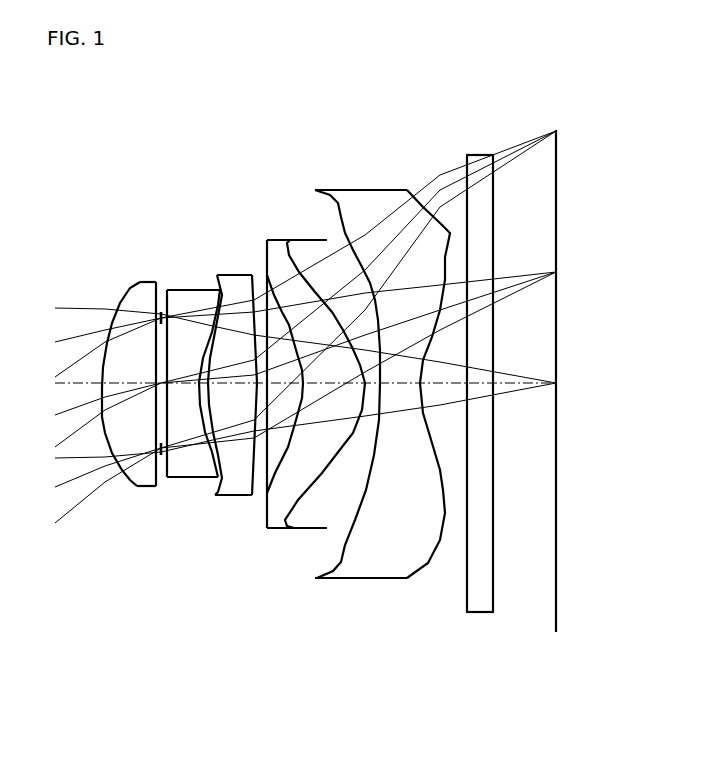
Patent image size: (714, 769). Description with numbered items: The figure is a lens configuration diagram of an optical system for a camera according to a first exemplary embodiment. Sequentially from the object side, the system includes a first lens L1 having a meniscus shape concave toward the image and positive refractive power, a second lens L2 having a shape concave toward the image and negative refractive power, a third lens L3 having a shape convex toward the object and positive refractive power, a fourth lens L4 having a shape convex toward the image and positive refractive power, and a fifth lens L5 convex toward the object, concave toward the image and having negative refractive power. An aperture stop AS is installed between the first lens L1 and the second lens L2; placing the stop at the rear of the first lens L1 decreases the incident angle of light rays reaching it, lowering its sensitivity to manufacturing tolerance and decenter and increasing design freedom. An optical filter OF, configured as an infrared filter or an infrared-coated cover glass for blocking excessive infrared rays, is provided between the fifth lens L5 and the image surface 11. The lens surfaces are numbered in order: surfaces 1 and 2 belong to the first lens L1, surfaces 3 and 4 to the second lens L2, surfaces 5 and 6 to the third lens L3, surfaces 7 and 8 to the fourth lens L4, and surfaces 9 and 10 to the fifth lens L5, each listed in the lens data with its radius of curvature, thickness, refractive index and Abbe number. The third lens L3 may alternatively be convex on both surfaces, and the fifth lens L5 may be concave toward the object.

The first surface 1 is at (114, 303).
The second surface 2 is at (156, 281).
The third surface 3 is at (156, 360).
The fourth surface 4 is at (210, 315).
The fifth surface 5 is at (206, 480).
The sixth surface 6 is at (240, 273).
The seventh surface 7 is at (277, 239).
The eighth surface 8 is at (305, 239).
The ninth surface 9 is at (337, 300).
The tenth surface 10 is at (450, 235).
The image surface 11 is at (557, 207).
The first lens L1 is at (108, 400).
The second lens L2 is at (192, 401).
The third lens L3 is at (222, 415).
The fourth lens L4 is at (308, 395).
The fifth lens L5 is at (382, 405).
The aperture stop AS is at (150, 483).
The optical filter OF is at (478, 620).